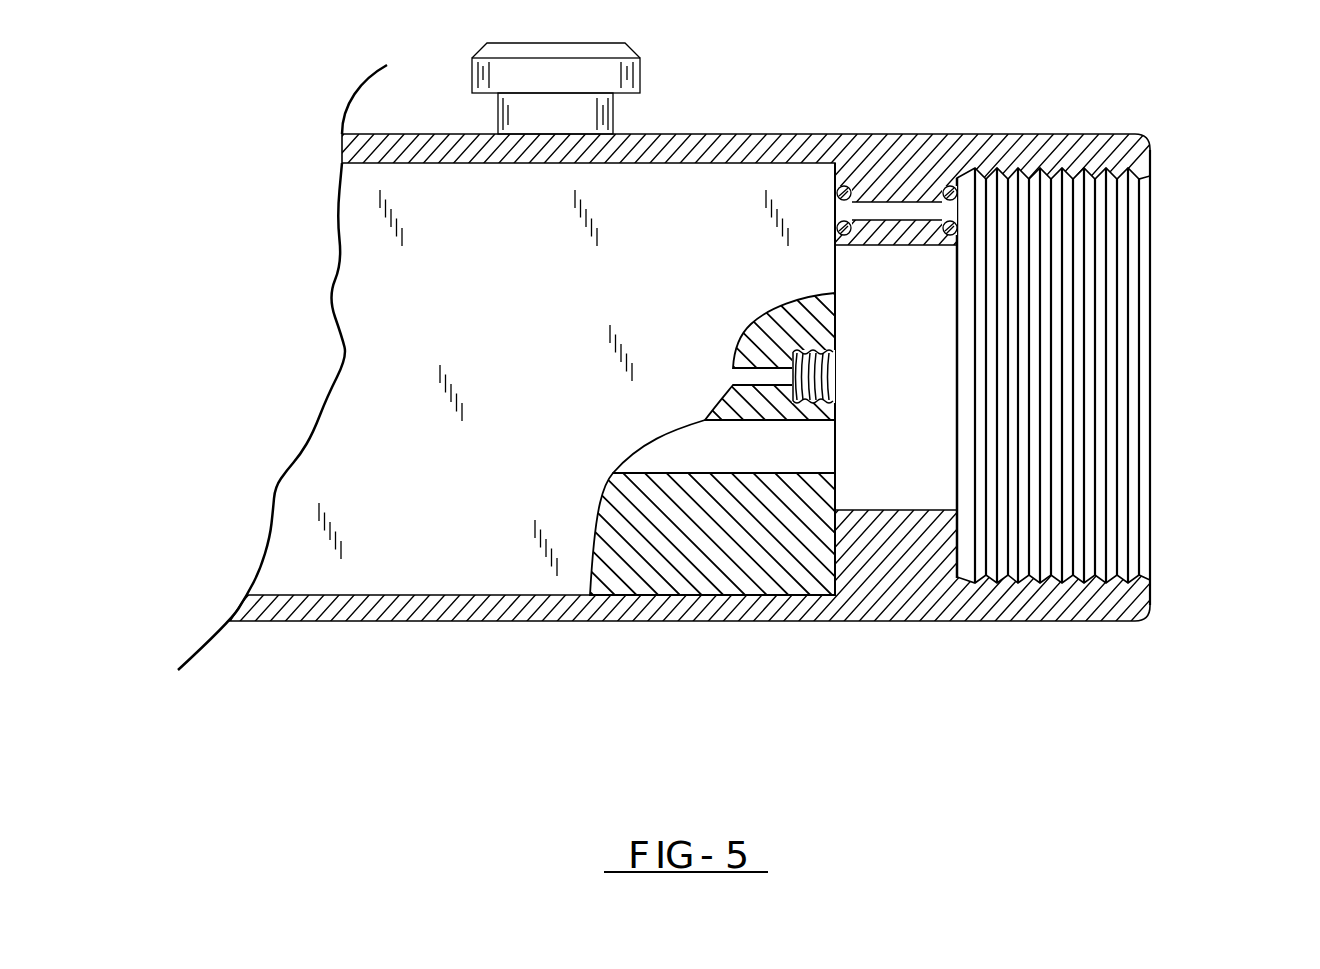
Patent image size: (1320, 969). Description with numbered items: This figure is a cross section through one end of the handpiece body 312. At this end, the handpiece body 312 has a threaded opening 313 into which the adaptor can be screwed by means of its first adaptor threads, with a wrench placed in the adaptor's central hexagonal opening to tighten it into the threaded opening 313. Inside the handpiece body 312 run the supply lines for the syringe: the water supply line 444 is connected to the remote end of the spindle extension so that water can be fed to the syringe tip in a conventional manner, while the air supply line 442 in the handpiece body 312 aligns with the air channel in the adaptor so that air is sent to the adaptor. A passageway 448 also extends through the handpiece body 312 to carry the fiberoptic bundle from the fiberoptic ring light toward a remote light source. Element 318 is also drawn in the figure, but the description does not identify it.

The handpiece body 312 is at (955, 598).
The threaded opening 313 is at (1107, 175).
The set screw 318 is at (832, 383).
The air supply line 442 is at (755, 375).
The water supply line 444 is at (893, 213).
The passageway 448 is at (712, 455).